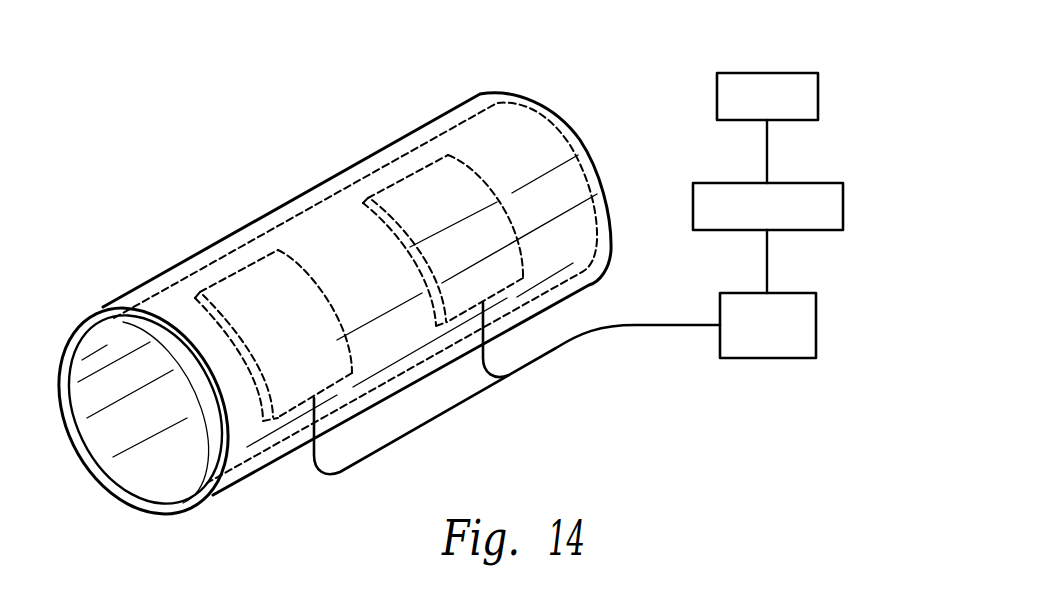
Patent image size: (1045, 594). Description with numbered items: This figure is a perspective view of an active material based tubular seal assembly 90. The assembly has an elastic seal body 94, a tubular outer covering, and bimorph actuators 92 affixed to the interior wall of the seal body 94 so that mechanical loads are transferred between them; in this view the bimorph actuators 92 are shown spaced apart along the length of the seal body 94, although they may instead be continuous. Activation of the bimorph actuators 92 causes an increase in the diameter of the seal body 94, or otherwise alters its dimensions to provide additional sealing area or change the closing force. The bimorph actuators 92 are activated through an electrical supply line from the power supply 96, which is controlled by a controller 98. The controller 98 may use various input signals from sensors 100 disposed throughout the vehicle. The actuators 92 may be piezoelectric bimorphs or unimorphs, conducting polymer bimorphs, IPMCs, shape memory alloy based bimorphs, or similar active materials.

The tubular seal assembly 90 is at (230, 158).
The bimorph actuators 92 is at (262, 303).
The elastic seal body 94 is at (388, 144).
The power supply 96 is at (816, 323).
The controller 98 is at (843, 207).
The sensors 100 is at (818, 98).